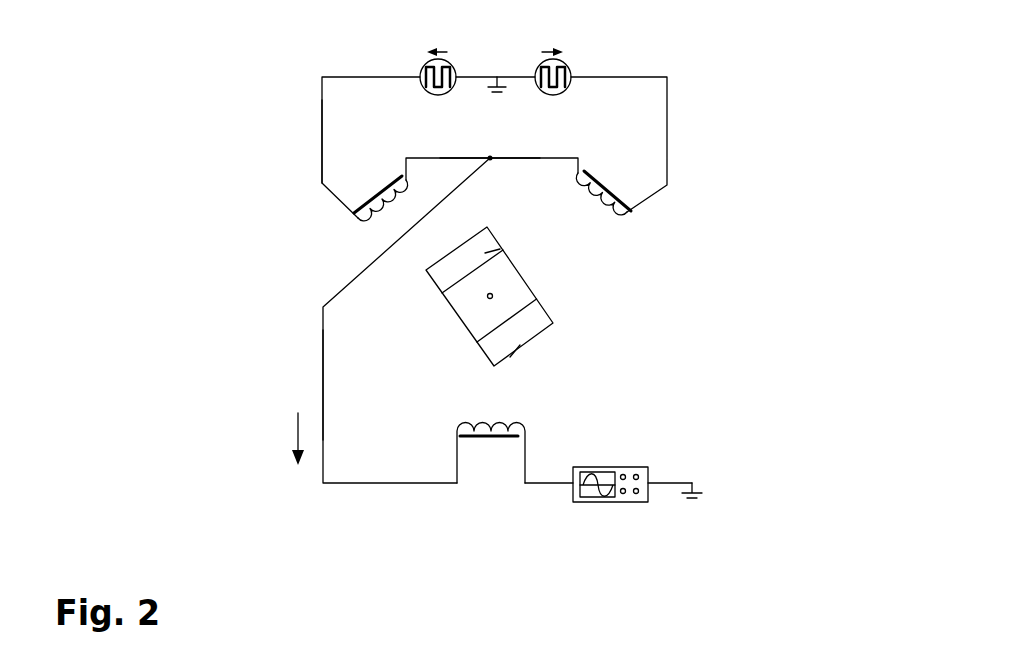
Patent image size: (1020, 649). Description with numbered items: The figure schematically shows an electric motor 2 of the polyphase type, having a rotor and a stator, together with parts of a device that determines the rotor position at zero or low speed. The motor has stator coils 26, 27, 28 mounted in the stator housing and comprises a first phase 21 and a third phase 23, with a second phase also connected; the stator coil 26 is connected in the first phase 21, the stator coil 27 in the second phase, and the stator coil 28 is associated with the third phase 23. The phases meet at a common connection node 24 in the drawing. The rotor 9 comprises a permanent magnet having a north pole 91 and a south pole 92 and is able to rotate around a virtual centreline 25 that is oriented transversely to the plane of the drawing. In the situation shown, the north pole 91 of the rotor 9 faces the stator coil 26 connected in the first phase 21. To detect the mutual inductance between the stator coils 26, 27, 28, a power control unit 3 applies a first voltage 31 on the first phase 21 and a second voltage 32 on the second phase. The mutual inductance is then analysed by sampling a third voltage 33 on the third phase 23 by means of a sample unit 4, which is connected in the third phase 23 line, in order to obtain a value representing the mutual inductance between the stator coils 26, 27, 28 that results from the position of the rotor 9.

The electric motor 2 is at (778, 476).
The power control unit 3 is at (425, 64).
The sample unit 4 is at (592, 493).
The rotor 9 is at (465, 325).
The first phase 21 is at (322, 170).
The third phase 23 is at (322, 387).
The connection node 24 is at (490, 158).
The virtual centreline 25 is at (492, 297).
The stator coil 26 is at (356, 212).
The stator coil 27 is at (652, 195).
The stator coil 28 is at (502, 436).
The first voltage 31 is at (447, 51).
The second voltage 32 is at (545, 52).
The third voltage 33 is at (298, 428).
The north pole 91 is at (500, 249).
The south pole 92 is at (510, 357).